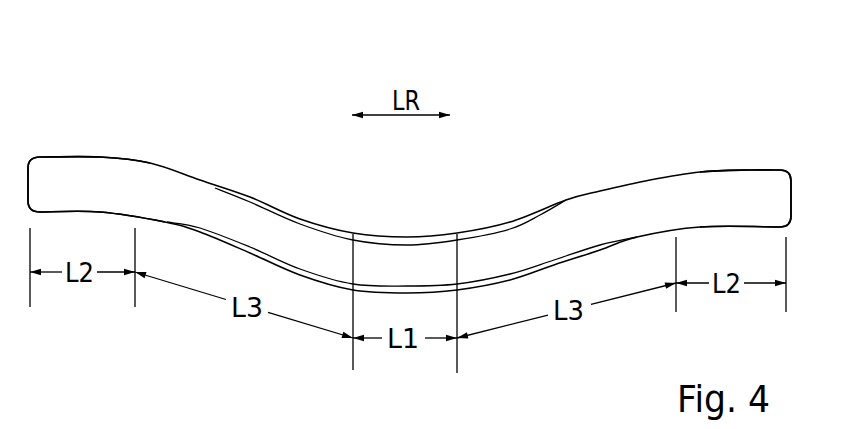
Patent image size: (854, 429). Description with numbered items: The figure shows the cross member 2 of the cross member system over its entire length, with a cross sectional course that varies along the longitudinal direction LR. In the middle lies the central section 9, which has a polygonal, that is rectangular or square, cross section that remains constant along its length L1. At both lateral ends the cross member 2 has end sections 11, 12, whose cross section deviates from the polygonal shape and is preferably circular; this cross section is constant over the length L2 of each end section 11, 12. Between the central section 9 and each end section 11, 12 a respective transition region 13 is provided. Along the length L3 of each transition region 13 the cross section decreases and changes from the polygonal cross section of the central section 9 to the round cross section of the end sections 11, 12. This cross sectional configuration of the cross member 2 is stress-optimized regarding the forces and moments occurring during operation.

The cross member 2 is at (409, 151).
The central section 9 is at (393, 235).
The end section 11 is at (67, 155).
The end section 12 is at (722, 167).
The transition region 13 is at (216, 186).